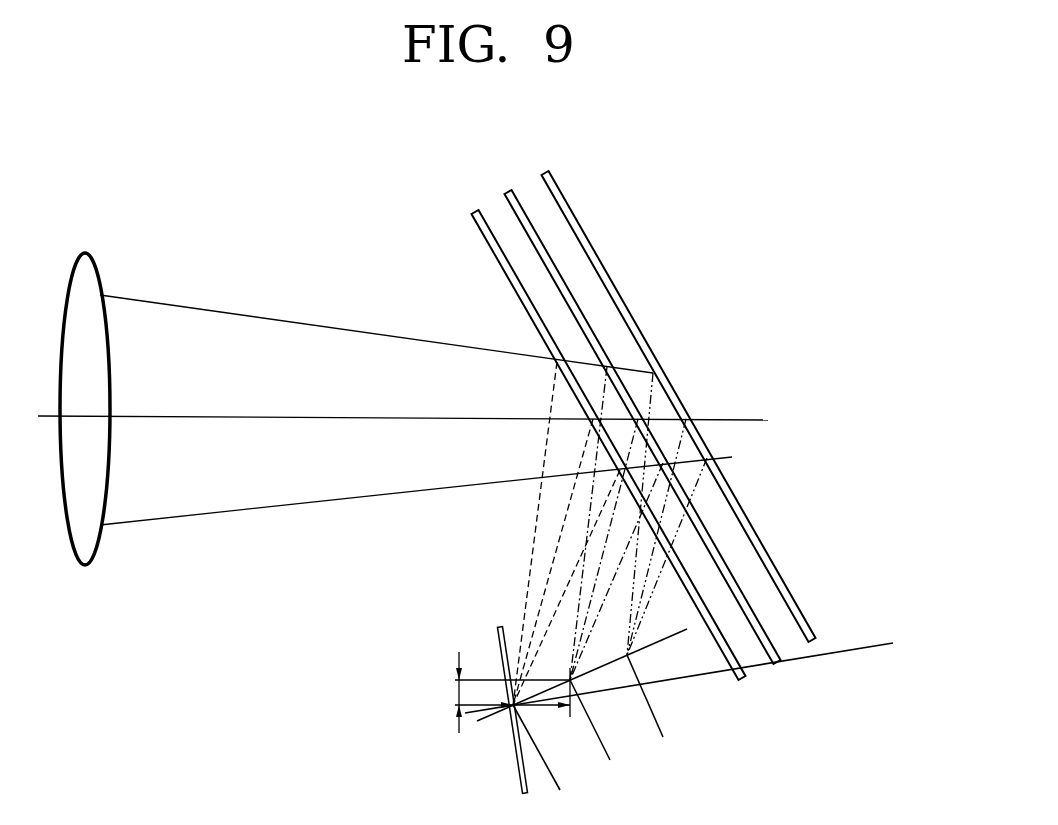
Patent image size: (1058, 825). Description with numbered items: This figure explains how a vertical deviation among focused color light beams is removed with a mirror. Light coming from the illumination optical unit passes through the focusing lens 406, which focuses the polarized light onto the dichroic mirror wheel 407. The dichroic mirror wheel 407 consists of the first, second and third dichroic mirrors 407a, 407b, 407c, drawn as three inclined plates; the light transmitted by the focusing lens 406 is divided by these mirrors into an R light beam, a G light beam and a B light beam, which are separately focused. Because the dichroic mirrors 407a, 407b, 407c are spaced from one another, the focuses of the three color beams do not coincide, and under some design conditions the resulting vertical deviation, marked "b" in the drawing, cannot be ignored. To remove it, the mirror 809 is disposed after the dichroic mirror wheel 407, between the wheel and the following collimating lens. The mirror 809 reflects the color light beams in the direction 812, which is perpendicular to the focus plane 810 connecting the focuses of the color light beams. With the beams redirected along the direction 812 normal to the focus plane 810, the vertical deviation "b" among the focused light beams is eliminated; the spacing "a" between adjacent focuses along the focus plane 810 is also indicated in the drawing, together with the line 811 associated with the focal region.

The focusing lens 406 is at (85, 253).
The dichroic mirror wheel 407 is at (490, 170).
The first dichroic mirror 407a is at (744, 680).
The second dichroic mirror 407b is at (779, 664).
The third dichroic mirror 407c is at (814, 642).
The mirror 809 is at (500, 627).
The focus plane 810 is at (483, 718).
The focal plane line 811 is at (678, 683).
The direction 812 is at (598, 747).